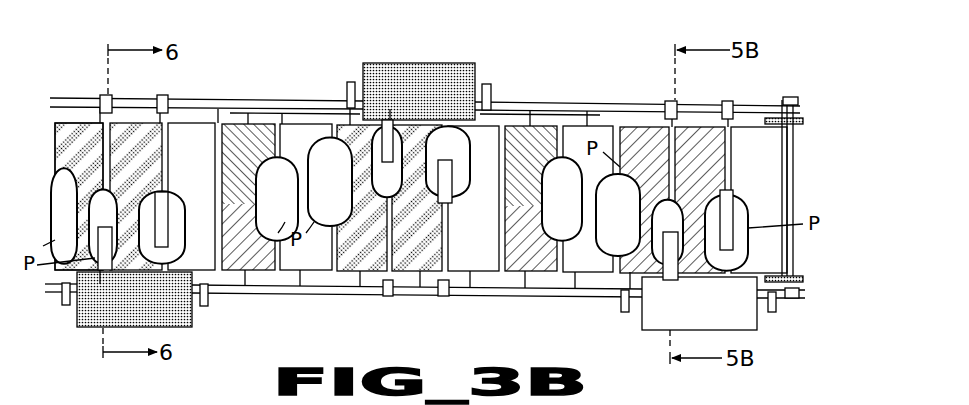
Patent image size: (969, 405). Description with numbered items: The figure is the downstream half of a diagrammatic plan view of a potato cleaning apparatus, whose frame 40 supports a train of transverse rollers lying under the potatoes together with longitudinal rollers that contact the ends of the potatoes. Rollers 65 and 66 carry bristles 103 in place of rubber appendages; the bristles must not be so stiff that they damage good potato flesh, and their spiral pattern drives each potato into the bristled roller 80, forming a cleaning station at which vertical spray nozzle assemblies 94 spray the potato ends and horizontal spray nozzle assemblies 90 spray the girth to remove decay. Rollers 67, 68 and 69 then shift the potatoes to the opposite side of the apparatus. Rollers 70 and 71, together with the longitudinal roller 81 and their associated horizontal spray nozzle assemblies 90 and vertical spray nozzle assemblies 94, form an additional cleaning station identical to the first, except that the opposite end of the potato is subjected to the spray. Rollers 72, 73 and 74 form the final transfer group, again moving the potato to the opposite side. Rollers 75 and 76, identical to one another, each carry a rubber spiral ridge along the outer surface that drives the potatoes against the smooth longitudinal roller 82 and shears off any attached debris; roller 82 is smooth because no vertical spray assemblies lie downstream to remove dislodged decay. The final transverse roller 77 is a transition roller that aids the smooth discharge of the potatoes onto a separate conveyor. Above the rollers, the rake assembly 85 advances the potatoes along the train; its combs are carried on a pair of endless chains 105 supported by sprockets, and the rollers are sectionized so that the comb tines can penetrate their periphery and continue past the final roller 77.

The frame 40 is at (515, 103).
The roller 65 is at (56, 148).
The roller 66 is at (160, 158).
The roller 67 is at (206, 122).
The roller 68 is at (258, 268).
The roller 69 is at (292, 270).
The roller 70 is at (345, 126).
The roller 71 is at (378, 270).
The roller 72 is at (467, 271).
The roller 73 is at (518, 271).
The roller 74 is at (574, 272).
The roller 75 is at (628, 127).
The roller 76 is at (730, 126).
The final transverse roller 77 is at (790, 174).
The bristled roller 80 is at (190, 321).
The roller 81 is at (410, 64).
The longitudinal roller 82 is at (757, 321).
The rake assembly 85 is at (801, 116).
The horizontal spray nozzle assembly 90 is at (161, 198).
The vertical spray nozzle assembly 94 is at (108, 95).
The bristles 103 is at (100, 122).
The endless chains 105 is at (797, 134).